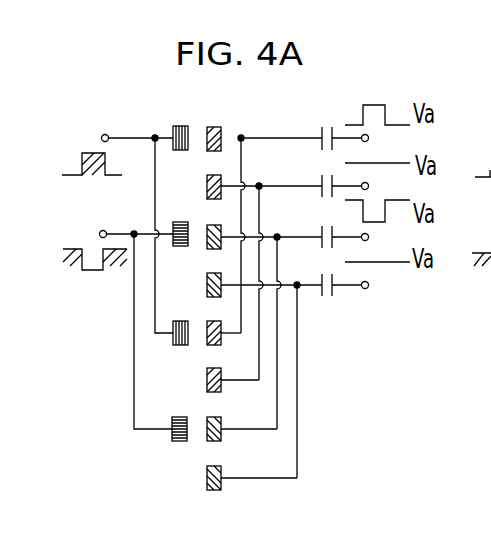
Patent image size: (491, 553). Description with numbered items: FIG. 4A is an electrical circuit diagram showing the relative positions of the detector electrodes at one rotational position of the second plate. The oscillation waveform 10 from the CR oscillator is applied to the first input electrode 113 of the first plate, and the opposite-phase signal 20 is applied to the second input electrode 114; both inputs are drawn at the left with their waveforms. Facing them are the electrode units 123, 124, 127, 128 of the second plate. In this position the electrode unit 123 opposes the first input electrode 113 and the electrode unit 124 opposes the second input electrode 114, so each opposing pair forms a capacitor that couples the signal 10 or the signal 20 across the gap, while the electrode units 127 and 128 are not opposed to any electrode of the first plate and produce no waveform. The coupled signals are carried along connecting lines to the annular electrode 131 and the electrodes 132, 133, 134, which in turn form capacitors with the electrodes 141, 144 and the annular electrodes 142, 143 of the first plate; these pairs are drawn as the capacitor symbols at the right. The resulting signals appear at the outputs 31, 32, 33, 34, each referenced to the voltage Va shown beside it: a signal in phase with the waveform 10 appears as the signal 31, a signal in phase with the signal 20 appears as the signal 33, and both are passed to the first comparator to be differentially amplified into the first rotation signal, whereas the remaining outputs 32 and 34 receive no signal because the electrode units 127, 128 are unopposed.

The oscillation waveform 10 is at (102, 135).
The opposite-phase signal 20 is at (103, 230).
The first input electrode 113 is at (182, 126).
The second input electrode 114 is at (180, 222).
The first electrode unit 123 is at (215, 127).
The second electrode unit 124 is at (216, 441).
The third electrode unit 127 is at (207, 378).
The fourth electrode unit 128 is at (207, 474).
The second annular electrode 131 is at (322, 127).
The electrode 132 is at (322, 227).
The electrode 133 is at (322, 177).
The electrode 134 is at (322, 296).
The electrode 141 is at (334, 150).
The second annular electrode 142 is at (334, 248).
The annular electrode 143 is at (338, 178).
The electrode 144 is at (336, 296).
The signal 31 is at (376, 139).
The output terminal 32 is at (369, 188).
The signal 33 is at (382, 240).
The output terminal 34 is at (383, 286).